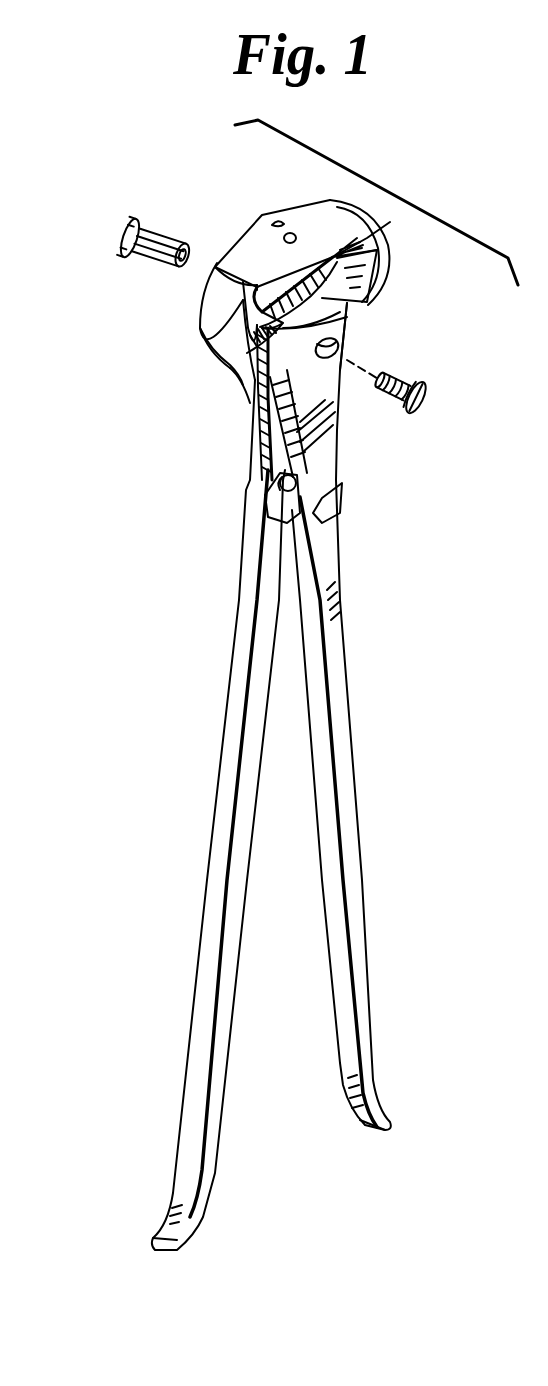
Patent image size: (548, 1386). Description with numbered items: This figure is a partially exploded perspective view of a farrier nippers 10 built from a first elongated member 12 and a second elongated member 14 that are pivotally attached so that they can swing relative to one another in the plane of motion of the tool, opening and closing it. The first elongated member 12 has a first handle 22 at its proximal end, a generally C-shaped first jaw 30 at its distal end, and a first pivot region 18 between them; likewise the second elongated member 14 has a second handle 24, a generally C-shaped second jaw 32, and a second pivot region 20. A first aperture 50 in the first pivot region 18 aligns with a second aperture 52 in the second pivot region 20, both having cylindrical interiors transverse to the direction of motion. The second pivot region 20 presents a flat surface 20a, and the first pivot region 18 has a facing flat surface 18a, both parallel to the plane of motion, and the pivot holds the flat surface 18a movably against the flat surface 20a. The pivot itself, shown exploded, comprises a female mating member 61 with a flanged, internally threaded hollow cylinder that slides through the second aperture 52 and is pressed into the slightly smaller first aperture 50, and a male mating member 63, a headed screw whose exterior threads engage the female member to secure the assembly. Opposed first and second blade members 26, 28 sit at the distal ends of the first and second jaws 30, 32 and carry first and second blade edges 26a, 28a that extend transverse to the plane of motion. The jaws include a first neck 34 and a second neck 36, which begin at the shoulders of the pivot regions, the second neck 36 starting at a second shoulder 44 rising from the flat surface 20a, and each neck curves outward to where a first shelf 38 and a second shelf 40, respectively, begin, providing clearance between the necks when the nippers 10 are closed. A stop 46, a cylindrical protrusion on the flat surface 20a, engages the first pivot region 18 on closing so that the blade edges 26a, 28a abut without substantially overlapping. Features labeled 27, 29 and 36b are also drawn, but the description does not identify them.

The farrier nippers 10 is at (160, 968).
The first elongated member 12 is at (365, 710).
The second elongated member 14 is at (212, 706).
The first pivot region 18 is at (343, 443).
The flat surface 18a is at (343, 483).
The second pivot region 20 is at (250, 403).
The flat surface 20a is at (277, 477).
The first handle 22 is at (358, 853).
The second handle 24 is at (212, 820).
The first blade member 26 is at (247, 207).
The first blade edge 26a is at (267, 215).
The curved wall 27 is at (210, 330).
The second blade member 28 is at (285, 196).
The second blade edge 28a is at (293, 235).
The cutting blade 29 is at (382, 245).
The first jaw 30 is at (207, 367).
The second jaw 32 is at (393, 267).
The first neck 34 is at (207, 318).
The second neck 36 is at (393, 250).
The ring inner edge 36b is at (390, 222).
The first shelf 38 is at (243, 290).
The second shelf 40 is at (370, 235).
The second shoulder 44 is at (375, 312).
The stop 46 is at (262, 500).
The first aperture 50 is at (340, 377).
The second aperture 52 is at (293, 343).
The female mating member 61 is at (120, 243).
The male mating member 63 is at (437, 400).